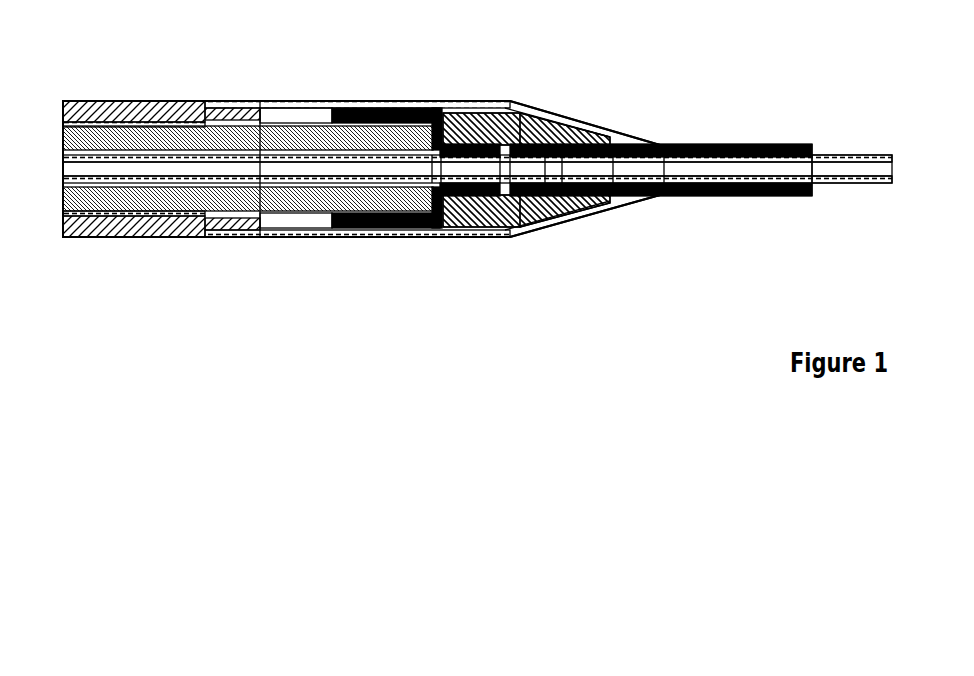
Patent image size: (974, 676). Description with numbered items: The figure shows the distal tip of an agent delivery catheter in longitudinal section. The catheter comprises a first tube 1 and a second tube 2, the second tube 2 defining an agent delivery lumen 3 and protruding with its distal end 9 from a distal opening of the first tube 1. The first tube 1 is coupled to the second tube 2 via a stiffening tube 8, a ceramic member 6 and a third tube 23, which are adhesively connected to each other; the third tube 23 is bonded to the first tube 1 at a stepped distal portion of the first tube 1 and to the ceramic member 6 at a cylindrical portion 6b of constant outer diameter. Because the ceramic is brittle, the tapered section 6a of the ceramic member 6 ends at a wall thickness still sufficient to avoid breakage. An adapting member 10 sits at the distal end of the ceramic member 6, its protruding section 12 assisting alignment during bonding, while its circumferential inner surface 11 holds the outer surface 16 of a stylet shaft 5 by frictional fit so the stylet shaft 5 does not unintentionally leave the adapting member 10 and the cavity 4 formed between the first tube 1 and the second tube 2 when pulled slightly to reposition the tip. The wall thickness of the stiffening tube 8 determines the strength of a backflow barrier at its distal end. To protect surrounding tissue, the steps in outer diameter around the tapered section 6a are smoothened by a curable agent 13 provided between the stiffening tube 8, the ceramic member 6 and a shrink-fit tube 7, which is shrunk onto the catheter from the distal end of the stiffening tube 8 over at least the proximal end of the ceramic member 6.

The first tube 1 is at (137, 112).
The second tube 2 is at (150, 158).
The agent delivery lumen 3 is at (283, 168).
The cavity 4 is at (72, 101).
The stylet shaft 5 is at (311, 138).
The ceramic member 6 is at (448, 130).
The tapered section 6a is at (563, 133).
The cylindrical portion 6b is at (478, 130).
The shrink-fit tube 7 is at (648, 143).
The stiffening tube 8 is at (813, 144).
The distal end 9 is at (836, 144).
The adapting member 10 is at (377, 230).
The circumferential inner surface 11 is at (402, 130).
The protruding section 12 is at (482, 202).
The curable agent 13 is at (520, 233).
The outer surface 16 is at (293, 220).
The third tube 23 is at (377, 106).